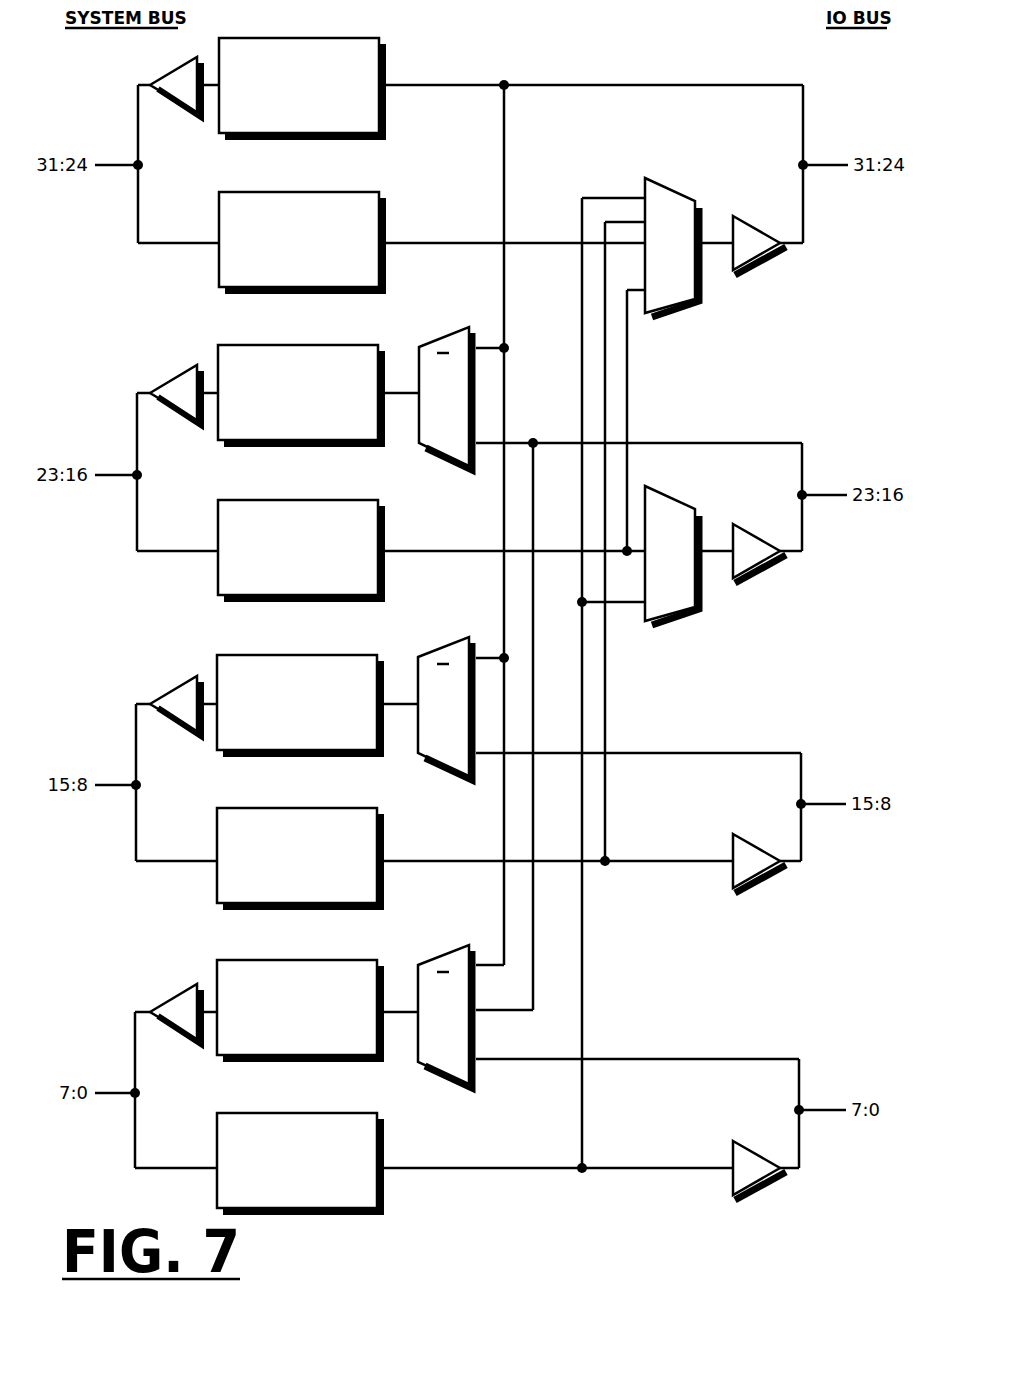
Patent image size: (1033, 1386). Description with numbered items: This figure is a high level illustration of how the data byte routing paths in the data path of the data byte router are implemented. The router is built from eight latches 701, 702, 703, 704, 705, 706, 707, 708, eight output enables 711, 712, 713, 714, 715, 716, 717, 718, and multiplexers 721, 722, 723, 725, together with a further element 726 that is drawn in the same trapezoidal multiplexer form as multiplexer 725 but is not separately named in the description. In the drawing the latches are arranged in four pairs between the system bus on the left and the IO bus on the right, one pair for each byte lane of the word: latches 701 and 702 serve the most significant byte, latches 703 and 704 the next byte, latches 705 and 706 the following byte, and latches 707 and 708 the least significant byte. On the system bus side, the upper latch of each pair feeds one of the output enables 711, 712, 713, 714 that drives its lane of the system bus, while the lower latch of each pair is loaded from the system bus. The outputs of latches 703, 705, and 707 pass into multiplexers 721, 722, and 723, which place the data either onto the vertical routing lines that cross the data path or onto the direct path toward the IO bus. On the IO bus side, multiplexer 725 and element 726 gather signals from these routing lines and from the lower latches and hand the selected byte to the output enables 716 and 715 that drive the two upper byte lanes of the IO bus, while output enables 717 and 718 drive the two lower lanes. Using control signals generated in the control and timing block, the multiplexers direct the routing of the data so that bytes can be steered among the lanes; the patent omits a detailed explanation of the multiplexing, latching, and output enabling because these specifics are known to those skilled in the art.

The latch 701 is at (302, 89).
The latch 702 is at (302, 243).
The latch 703 is at (301, 396).
The latch 704 is at (301, 551).
The latch 705 is at (300, 706).
The latch 706 is at (300, 859).
The latch 707 is at (300, 1011).
The latch 708 is at (300, 1164).
The output enable 711 is at (176, 70).
The output enable 712 is at (175, 378).
The output enable 713 is at (175, 689).
The output enable 714 is at (173, 994).
The output enable 715 is at (752, 223).
The output enable 716 is at (752, 534).
The output enable 717 is at (752, 844).
The output enable 718 is at (750, 1153).
The multiplexer 721 is at (445, 335).
The multiplexer 722 is at (445, 645).
The multiplexer 723 is at (445, 955).
The multiplexer 725 is at (672, 497).
The multiplexer 726 is at (672, 185).